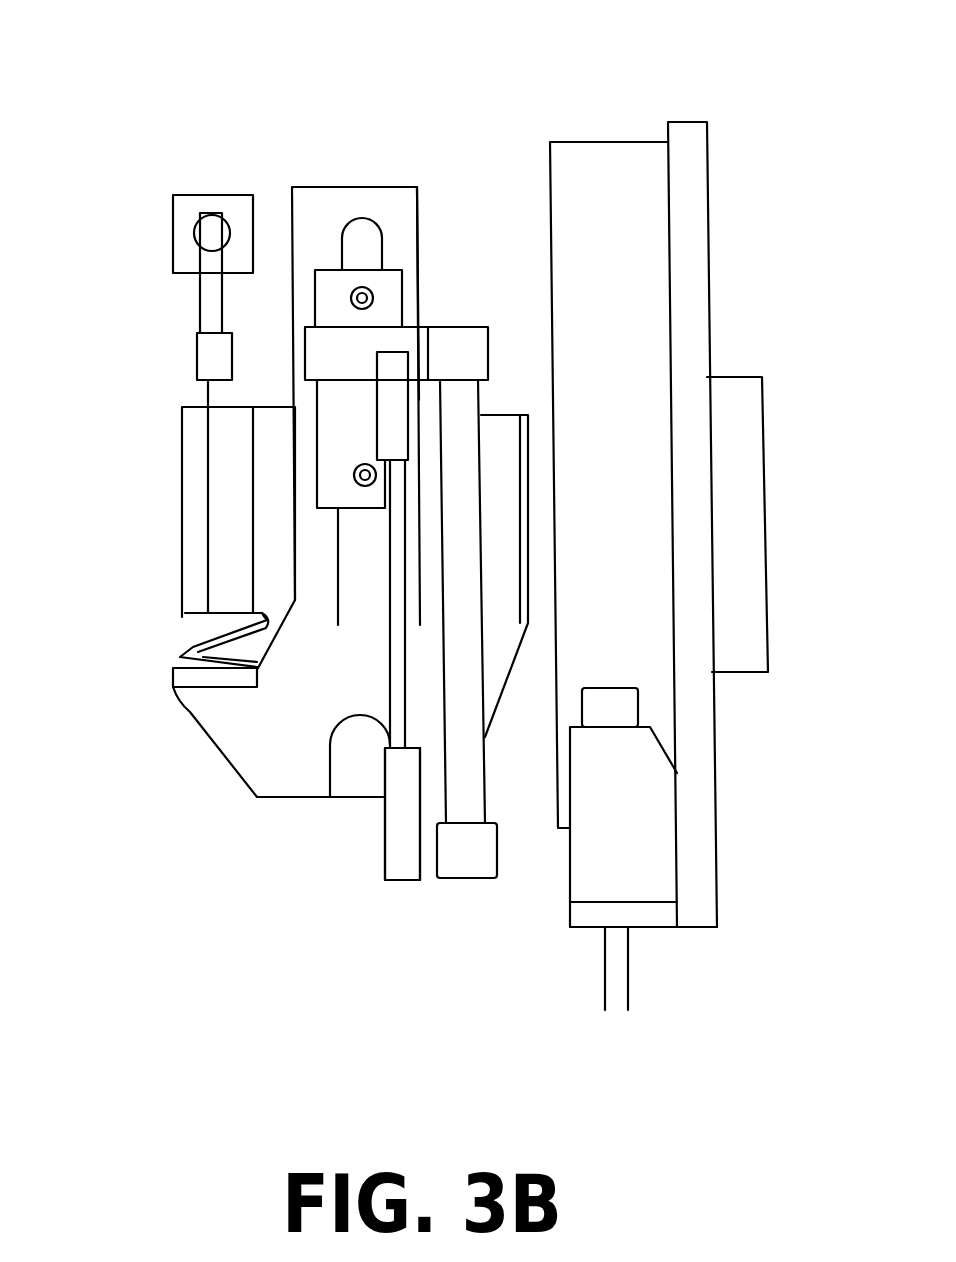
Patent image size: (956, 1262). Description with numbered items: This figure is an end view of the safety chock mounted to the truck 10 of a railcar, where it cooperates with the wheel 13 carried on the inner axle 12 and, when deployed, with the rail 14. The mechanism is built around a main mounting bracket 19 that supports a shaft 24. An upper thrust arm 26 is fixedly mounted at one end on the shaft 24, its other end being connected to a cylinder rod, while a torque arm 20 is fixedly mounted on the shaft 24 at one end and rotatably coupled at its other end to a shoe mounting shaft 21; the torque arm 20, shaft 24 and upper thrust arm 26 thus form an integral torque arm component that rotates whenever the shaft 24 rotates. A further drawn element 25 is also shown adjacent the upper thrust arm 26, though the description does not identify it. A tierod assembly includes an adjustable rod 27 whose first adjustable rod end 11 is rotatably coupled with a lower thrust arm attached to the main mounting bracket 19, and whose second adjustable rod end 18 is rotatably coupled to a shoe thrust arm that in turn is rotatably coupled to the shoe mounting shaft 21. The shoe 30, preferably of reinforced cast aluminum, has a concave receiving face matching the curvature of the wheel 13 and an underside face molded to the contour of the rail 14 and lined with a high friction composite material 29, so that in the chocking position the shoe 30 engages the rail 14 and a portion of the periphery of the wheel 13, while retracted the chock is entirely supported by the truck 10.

The truck 10 is at (310, 202).
The first adjustable rod end 11 is at (387, 407).
The inner axle 12 is at (182, 505).
The wheel 13 is at (608, 163).
The rail 14 is at (632, 965).
The second adjustable rod end 18 is at (397, 770).
The main mounting bracket 19 is at (415, 237).
The torque arm 20 is at (457, 543).
The shoe mounting shaft 21 is at (397, 860).
The shaft 24 is at (200, 360).
The bracket 25 is at (192, 195).
The upper thrust arm 26 is at (243, 250).
The adjustable rod 27 is at (360, 567).
The high friction composite material 29 is at (597, 915).
The shoe 30 is at (637, 807).